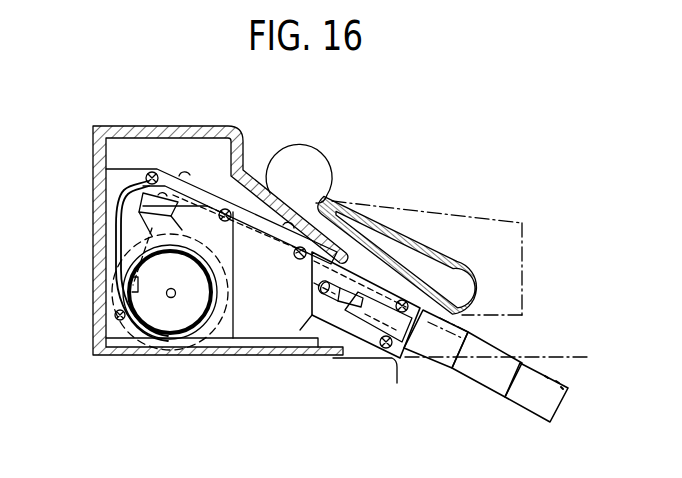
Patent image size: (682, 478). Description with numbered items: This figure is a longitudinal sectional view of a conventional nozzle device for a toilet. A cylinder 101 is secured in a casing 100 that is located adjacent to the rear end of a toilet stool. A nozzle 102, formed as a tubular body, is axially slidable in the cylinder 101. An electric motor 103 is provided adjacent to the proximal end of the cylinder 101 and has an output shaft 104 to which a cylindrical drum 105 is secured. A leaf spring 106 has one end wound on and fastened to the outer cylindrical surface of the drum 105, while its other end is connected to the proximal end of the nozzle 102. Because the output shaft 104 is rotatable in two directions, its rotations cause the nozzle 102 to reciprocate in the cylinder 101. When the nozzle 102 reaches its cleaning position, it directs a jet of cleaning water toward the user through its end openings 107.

The casing 100 is at (154, 126).
The cylinder 101 is at (333, 318).
The nozzle 102 is at (467, 365).
The electric motor 103 is at (218, 327).
The output shaft 104 is at (171, 298).
The cylindrical drum 105 is at (160, 312).
The leaf spring 106 is at (120, 238).
The end openings 107 is at (562, 385).